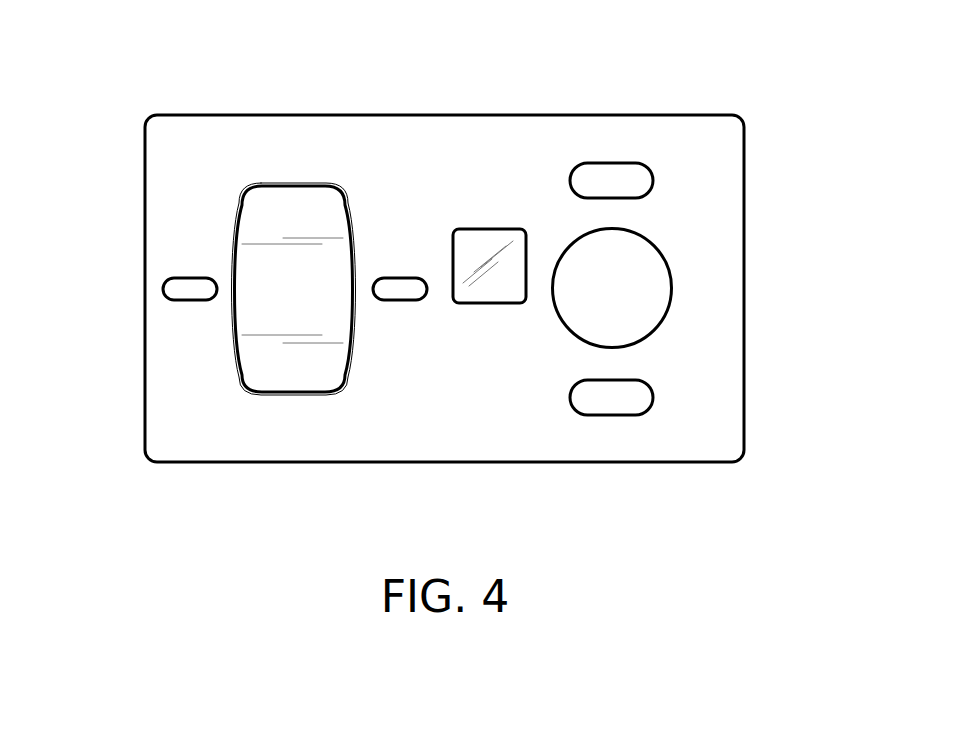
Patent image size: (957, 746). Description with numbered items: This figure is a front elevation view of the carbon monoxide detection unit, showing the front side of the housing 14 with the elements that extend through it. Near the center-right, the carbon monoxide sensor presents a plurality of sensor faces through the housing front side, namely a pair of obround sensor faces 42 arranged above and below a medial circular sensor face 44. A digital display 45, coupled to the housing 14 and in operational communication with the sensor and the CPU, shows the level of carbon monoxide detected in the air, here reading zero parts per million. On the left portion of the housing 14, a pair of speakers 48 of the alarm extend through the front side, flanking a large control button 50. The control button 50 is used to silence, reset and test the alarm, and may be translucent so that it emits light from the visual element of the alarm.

The housing 14 is at (145, 407).
The obround sensor faces 42 is at (640, 396).
The medial circular sensor face 44 is at (648, 285).
The digital display 45 is at (468, 240).
The speakers 48 is at (392, 290).
The control button 50 is at (292, 368).